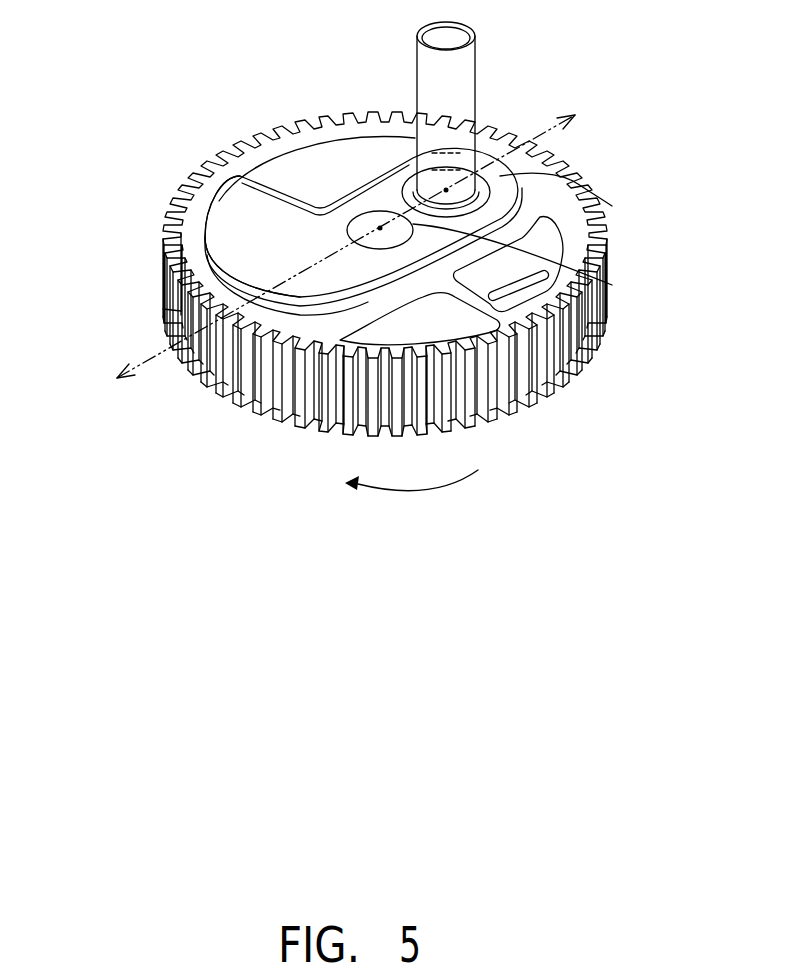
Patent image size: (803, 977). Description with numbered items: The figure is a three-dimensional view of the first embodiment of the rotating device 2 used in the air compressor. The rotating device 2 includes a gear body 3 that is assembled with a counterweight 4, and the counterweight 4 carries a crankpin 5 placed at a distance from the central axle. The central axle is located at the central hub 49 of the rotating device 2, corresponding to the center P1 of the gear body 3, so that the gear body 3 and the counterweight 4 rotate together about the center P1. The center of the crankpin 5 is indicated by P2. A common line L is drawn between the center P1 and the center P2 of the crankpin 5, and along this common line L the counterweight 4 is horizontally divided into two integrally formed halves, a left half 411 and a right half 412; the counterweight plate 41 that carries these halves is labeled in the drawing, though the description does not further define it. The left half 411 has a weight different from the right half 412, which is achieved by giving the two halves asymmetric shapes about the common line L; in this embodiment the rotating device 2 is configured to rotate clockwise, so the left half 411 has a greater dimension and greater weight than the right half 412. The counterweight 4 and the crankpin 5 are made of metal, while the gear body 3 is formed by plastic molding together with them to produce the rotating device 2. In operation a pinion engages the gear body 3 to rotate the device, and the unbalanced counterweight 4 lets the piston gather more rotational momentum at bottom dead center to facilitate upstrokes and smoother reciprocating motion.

The rotating device 2 is at (146, 76).
The gear body 3 is at (293, 430).
The counterweight 4 is at (253, 196).
The cam plate 41 is at (283, 212).
The left half 411 is at (258, 248).
The right half 412 is at (327, 283).
The central hub 49 is at (358, 220).
The crankpin 5 is at (452, 80).
The center of the gear body P1 is at (577, 273).
The center of crankpin P2 is at (583, 190).
The common line L is at (335, 259).